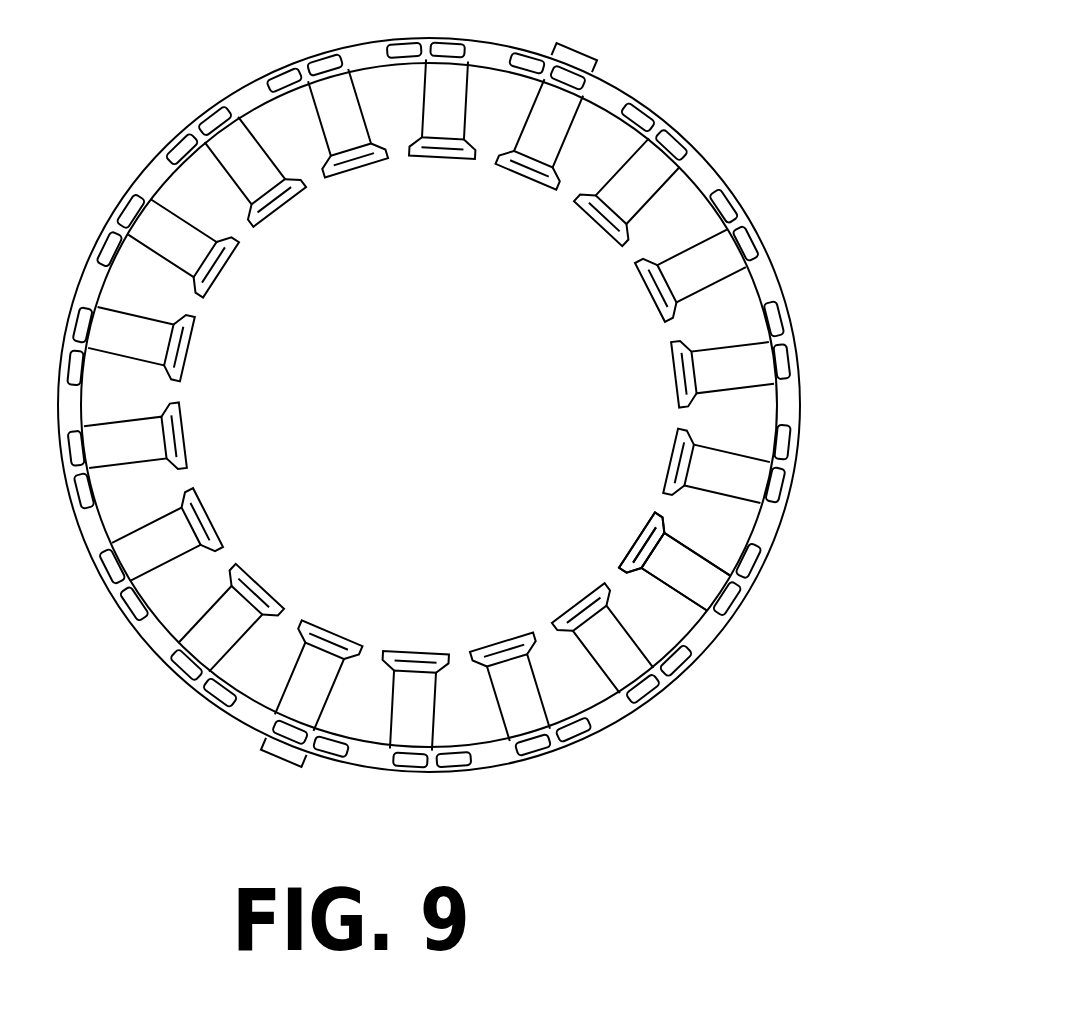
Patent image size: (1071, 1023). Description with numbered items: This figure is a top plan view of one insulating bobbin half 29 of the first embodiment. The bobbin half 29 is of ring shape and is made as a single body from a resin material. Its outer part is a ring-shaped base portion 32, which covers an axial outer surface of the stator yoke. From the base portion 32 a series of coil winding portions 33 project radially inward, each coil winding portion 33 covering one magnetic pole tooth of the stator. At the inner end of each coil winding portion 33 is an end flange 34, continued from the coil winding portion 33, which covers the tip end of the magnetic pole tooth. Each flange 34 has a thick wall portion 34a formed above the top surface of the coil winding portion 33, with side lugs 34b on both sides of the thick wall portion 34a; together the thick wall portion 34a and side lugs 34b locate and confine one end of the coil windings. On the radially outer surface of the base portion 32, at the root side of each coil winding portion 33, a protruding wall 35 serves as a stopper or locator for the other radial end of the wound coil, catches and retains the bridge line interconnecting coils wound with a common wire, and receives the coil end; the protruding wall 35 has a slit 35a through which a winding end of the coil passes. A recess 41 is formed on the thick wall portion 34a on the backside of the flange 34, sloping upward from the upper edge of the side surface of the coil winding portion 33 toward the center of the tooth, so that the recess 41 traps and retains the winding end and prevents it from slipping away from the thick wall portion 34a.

The bobbin half 29 is at (479, 405).
The base portion 32 is at (790, 398).
The coil winding portion 33 is at (705, 592).
The end flange 34 is at (548, 418).
The thick wall portion 34a is at (652, 533).
The side lugs 34b is at (660, 515).
The protruding wall 35 is at (742, 612).
The slit 35a is at (742, 577).
The recess 41 is at (645, 560).